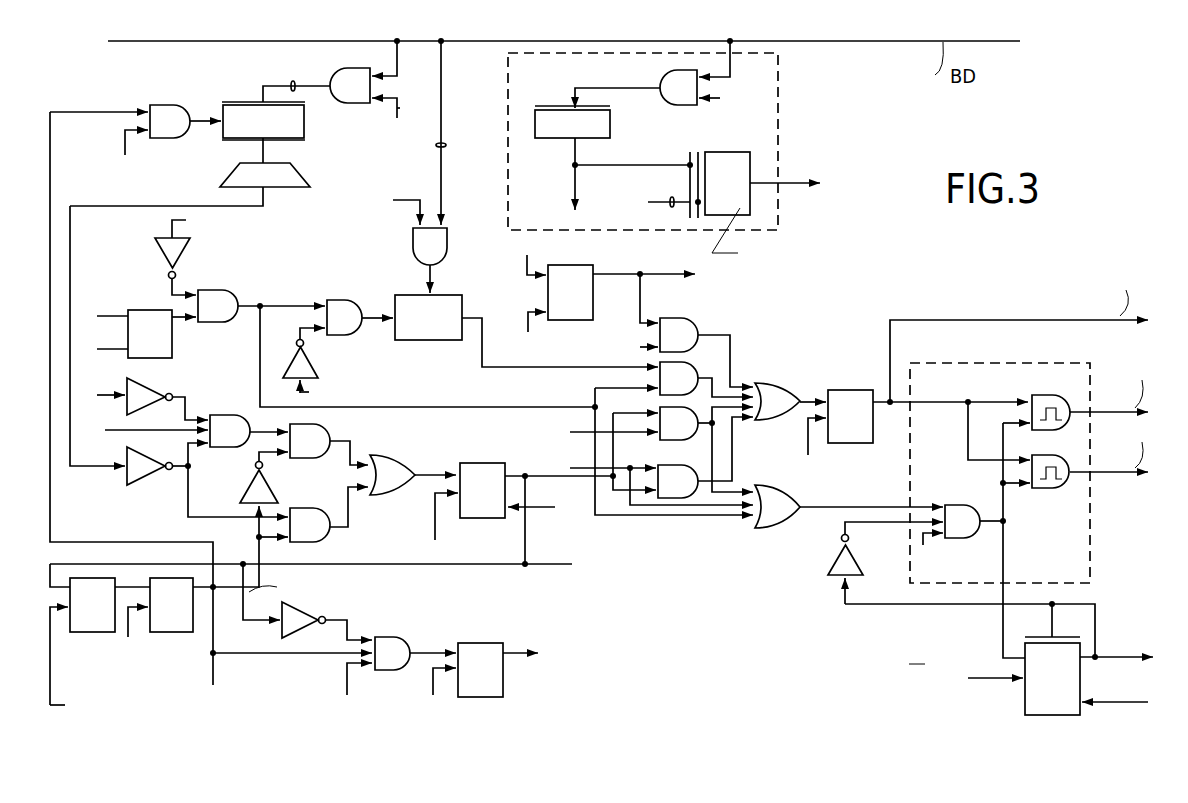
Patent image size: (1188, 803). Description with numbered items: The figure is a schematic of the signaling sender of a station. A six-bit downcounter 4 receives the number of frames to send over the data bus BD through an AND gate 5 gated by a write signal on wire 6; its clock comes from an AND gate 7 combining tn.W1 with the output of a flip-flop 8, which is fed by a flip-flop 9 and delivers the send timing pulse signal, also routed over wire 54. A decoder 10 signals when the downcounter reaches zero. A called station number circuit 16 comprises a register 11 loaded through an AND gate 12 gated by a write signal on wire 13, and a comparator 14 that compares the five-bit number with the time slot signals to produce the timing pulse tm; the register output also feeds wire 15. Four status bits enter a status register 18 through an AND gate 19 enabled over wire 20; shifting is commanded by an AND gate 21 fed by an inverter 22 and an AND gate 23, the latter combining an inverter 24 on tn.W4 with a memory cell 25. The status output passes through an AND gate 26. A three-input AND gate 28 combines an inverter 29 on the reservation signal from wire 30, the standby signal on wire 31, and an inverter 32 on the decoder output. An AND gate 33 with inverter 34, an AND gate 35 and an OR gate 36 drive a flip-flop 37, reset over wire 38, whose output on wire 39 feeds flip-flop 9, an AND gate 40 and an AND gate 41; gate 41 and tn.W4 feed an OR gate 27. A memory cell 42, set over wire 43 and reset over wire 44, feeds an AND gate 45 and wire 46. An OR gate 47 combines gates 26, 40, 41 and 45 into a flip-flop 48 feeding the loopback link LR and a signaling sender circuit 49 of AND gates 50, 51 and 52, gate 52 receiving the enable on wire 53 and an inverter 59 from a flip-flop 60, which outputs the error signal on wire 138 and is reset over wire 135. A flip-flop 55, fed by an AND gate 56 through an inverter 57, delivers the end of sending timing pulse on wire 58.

The downcounter 4 is at (305, 122).
The AND gate 5 is at (342, 80).
The wire 6 is at (421, 105).
The AND gate 7 is at (165, 115).
The flip-flop 8 is at (168, 632).
The flip-flop 9 is at (97, 632).
The decoder 10 is at (228, 178).
The register 11 is at (552, 128).
The AND gate 12 is at (683, 93).
The wire 13 is at (720, 98).
The comparator 14 is at (727, 160).
The wire 15 is at (568, 190).
The called station number circuit 16 is at (768, 88).
The status register 18 is at (425, 340).
The AND gate 19 is at (422, 251).
The wire 20 is at (418, 200).
The AND gate 21 is at (348, 312).
The inverter 22 is at (309, 369).
The AND gate 23 is at (215, 292).
The inverter 24 is at (160, 248).
The memory cell 25 is at (172, 345).
The AND gate 26 is at (685, 378).
The OR gate 27 is at (777, 530).
The three-input AND gate 28 is at (237, 418).
The inverter 29 is at (148, 391).
The wire 30 is at (108, 393).
The wire 31 is at (110, 428).
The inverter 32 is at (138, 471).
The AND gate 33 is at (315, 437).
The inverter 34 is at (250, 490).
The AND gate 35 is at (303, 517).
The OR gate 36 is at (382, 458).
The flip-flop 37 is at (472, 461).
The wire 38 is at (543, 507).
The wire 39 is at (540, 563).
The AND gate 40 is at (668, 477).
The AND gate 41 is at (678, 428).
The memory cell 42 is at (568, 308).
The wire 43 is at (526, 262).
The wire 44 is at (528, 332).
The AND gate 45 is at (681, 331).
The wire 46 is at (662, 278).
The OR gate 47 is at (786, 395).
The flip-flop 48 is at (841, 390).
The signaling sender circuit 49 is at (977, 377).
The AND gate 50 is at (1040, 400).
The AND gate 51 is at (1055, 487).
The AND gate 52 is at (960, 512).
The wire 53 is at (925, 545).
The wire 54 is at (215, 681).
The flip-flop 55 is at (480, 643).
The AND gate 56 is at (402, 643).
The inverter 57 is at (298, 618).
The wire 58 is at (510, 655).
The inverter 59 is at (843, 568).
The flip-flop 60 is at (1030, 690).
The wire 135 is at (1146, 704).
The wire 138 is at (1107, 656).